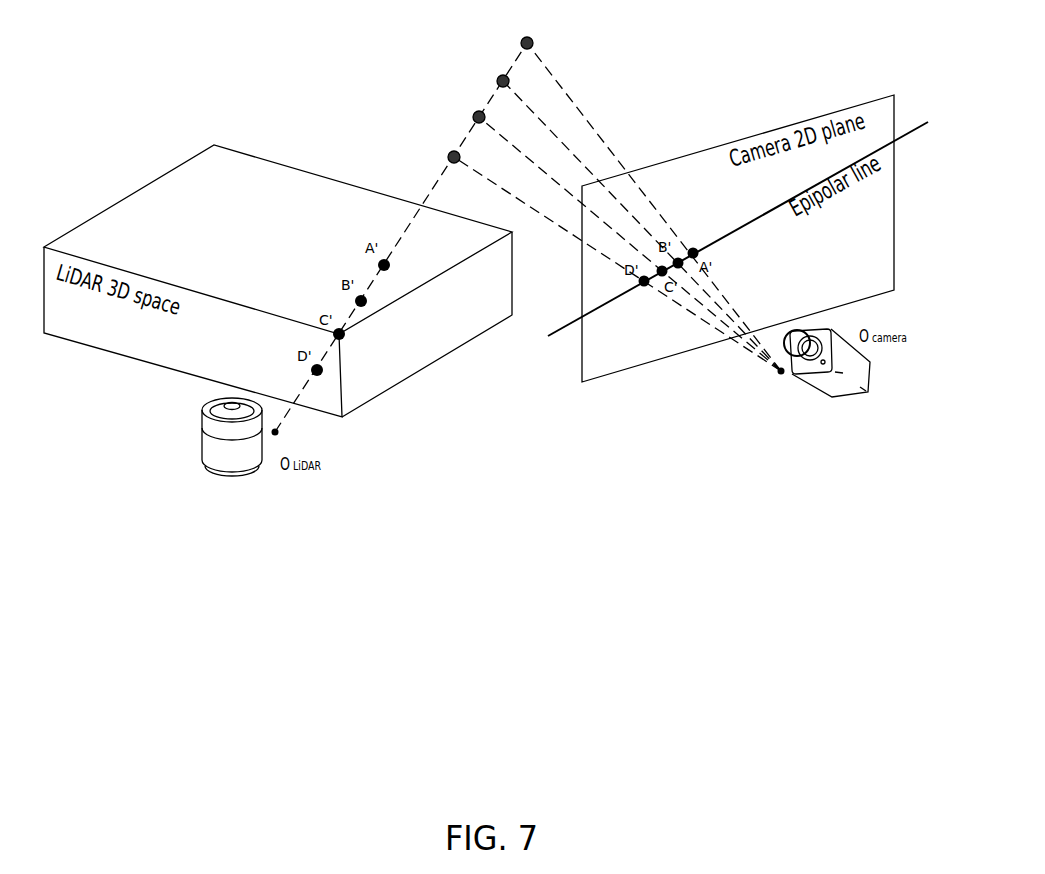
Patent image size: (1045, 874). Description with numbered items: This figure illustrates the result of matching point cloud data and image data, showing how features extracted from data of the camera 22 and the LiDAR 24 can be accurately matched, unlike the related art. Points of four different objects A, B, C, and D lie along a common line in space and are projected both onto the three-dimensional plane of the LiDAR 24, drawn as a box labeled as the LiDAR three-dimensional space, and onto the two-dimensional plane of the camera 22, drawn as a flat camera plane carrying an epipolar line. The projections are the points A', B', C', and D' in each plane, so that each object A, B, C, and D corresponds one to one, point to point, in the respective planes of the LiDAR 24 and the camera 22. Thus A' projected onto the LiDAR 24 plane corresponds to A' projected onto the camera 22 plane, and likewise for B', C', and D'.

The camera 22 is at (823, 381).
The LiDAR 24 is at (202, 446).
The object point A is at (519, 36).
The object point B is at (495, 76).
The object point C is at (471, 112).
The object point D is at (446, 153).